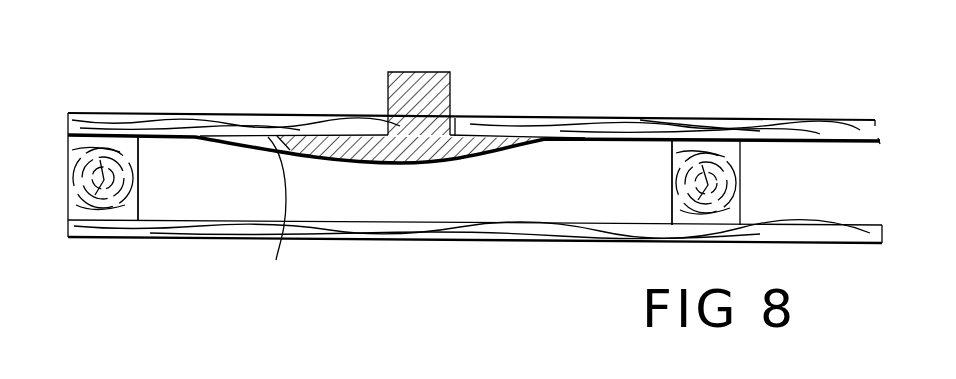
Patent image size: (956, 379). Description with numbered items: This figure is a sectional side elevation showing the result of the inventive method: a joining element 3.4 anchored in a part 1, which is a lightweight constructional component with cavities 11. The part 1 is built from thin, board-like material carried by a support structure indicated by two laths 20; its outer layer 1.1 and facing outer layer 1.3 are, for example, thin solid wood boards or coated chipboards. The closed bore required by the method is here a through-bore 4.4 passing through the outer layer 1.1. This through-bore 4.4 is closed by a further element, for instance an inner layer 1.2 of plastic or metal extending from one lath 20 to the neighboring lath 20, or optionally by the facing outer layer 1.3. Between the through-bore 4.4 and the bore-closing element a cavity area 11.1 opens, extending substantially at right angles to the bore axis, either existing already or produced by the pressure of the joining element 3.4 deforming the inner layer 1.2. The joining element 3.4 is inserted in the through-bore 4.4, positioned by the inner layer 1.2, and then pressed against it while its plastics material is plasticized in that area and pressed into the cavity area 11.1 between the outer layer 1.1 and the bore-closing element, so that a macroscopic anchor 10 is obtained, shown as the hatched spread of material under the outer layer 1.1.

The part 1 is at (793, 106).
The outer layer 1.1 is at (720, 124).
The inner layer 1.2 is at (860, 143).
The outer layer 1.3 is at (397, 238).
The joining element 3.4 is at (450, 75).
The through-bore 4.4 is at (455, 122).
The macroscopic anchor 10 is at (448, 163).
The cavities 11 is at (606, 199).
The cavity area 11.1 is at (293, 212).
The laths 20 is at (138, 190).